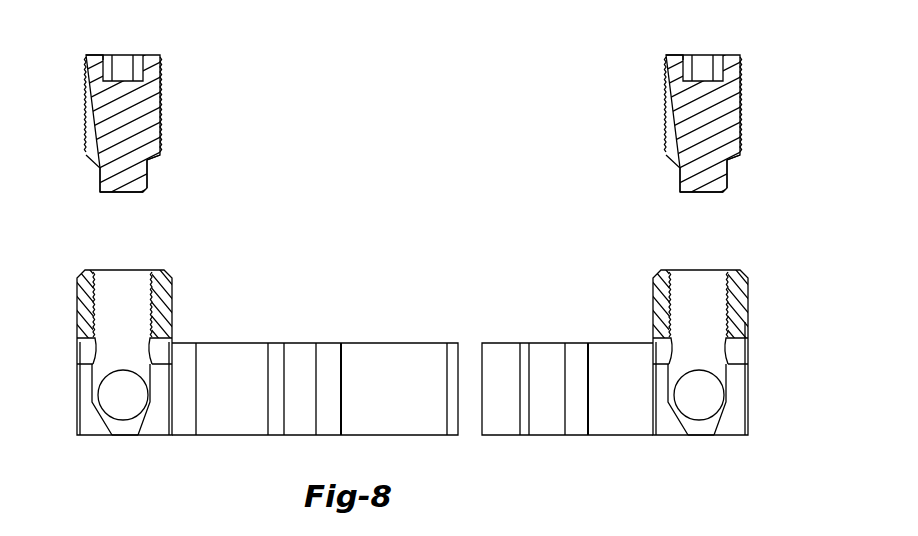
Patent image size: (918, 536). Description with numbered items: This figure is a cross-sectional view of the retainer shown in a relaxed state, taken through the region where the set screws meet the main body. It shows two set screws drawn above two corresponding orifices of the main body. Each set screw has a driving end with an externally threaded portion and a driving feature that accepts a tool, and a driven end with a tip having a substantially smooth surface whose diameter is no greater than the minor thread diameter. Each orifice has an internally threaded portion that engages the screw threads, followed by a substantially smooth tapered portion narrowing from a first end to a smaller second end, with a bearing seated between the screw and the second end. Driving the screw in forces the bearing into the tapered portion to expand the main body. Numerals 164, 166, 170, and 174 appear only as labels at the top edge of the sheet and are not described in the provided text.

The arm 164 is at (327, 4).
The pin 166 is at (488, 13).
The first leg 170 is at (408, 0).
The second leg 174 is at (446, 0).